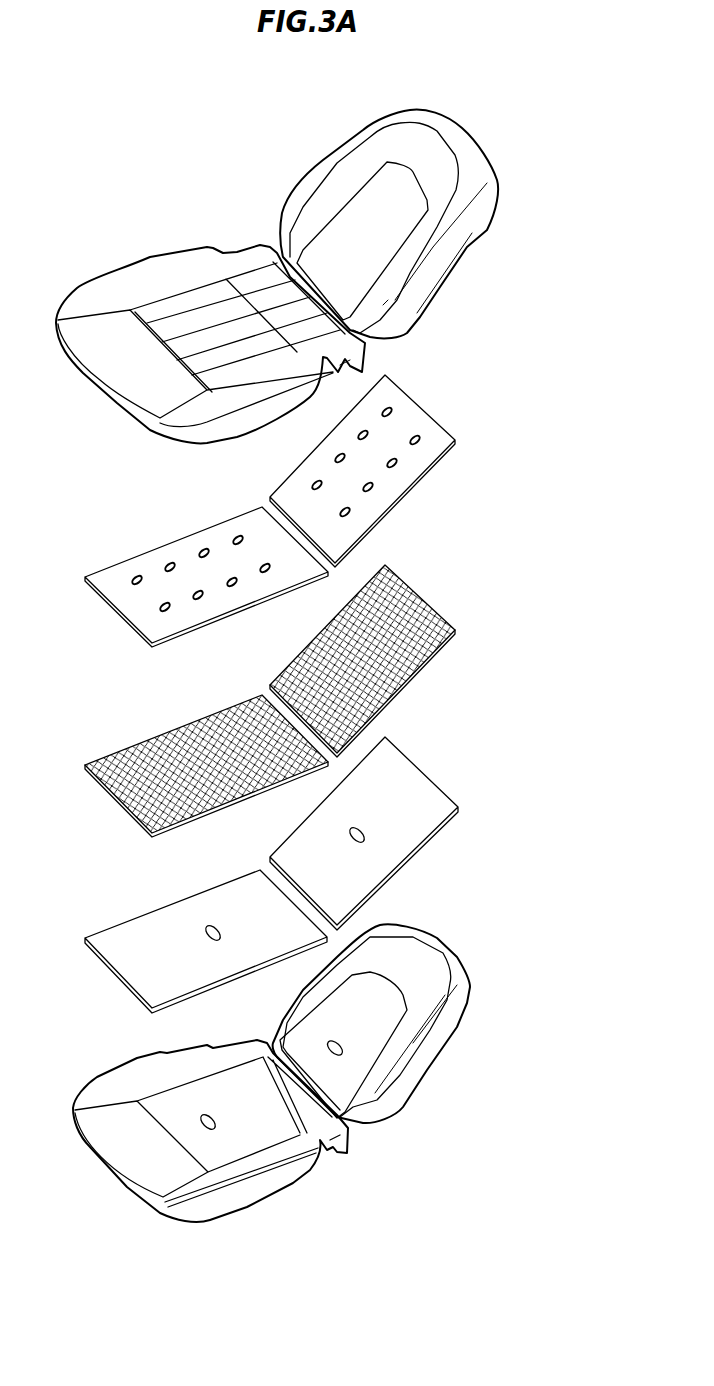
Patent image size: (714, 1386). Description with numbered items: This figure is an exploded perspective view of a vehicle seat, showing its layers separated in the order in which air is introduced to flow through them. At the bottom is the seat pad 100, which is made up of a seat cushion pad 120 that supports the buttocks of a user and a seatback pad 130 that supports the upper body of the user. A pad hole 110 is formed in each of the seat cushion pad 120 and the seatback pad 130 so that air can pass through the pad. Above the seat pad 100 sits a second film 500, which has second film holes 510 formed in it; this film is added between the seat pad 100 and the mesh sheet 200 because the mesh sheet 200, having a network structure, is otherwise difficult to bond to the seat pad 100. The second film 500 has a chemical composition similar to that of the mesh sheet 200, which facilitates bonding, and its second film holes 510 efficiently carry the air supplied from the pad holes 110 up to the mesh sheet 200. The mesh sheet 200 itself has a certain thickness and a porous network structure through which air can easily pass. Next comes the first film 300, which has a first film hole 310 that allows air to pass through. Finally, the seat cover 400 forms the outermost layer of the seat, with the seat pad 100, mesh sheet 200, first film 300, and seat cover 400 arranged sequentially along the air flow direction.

The seat pad 100 is at (319, 1073).
The pad hole 110 is at (326, 1048).
The seat cushion pad 120 is at (340, 1148).
The seatback pad 130 is at (360, 1067).
The mesh sheet 200 is at (383, 713).
The first film 300 is at (292, 511).
The first film hole 310 is at (208, 549).
The seat cover 400 is at (397, 338).
The second film 500 is at (304, 875).
The second film holes 510 is at (347, 833).